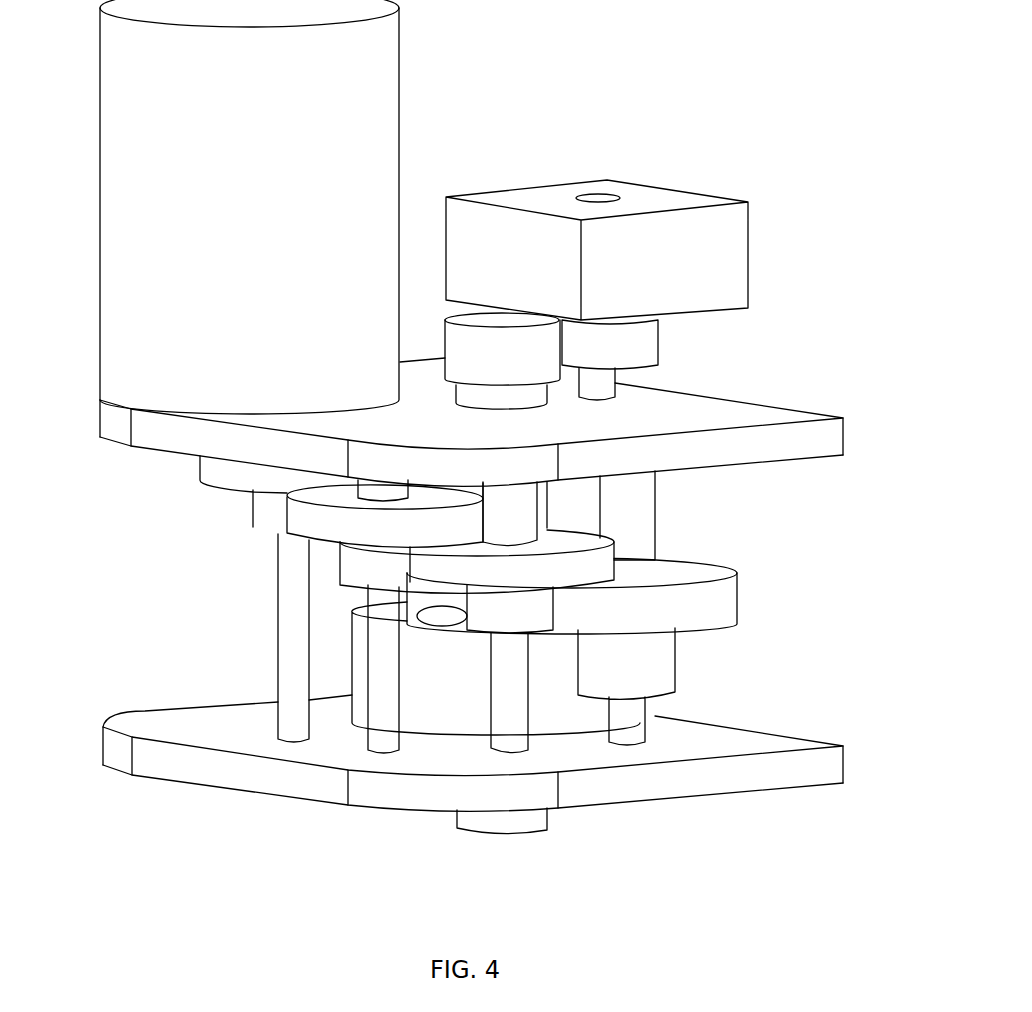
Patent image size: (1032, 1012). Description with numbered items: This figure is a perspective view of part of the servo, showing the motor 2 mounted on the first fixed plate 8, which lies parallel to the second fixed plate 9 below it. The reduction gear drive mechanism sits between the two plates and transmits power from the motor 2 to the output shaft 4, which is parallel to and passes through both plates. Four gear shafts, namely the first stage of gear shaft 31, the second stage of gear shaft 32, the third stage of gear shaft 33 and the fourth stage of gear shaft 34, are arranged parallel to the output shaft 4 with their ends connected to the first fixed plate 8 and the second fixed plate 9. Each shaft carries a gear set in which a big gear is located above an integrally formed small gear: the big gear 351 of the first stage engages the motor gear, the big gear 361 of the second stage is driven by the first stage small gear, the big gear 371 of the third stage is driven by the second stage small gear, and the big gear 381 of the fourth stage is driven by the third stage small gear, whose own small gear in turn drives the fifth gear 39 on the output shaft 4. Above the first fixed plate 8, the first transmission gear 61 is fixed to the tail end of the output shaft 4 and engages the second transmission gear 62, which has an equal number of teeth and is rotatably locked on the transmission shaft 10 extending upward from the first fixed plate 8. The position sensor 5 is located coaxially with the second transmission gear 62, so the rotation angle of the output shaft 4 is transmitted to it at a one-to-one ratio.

The motor 2 is at (100, 214).
The position sensor 5 is at (740, 258).
The first fixed plate 8 is at (100, 428).
The second fixed plate 9 is at (845, 762).
The transmission shaft 10 is at (614, 380).
The output shaft 4 is at (548, 824).
The first stage of gear shaft 31 is at (280, 600).
The second stage of gear shaft 32 is at (380, 745).
The third stage of gear shaft 33 is at (500, 740).
The fourth stage of gear shaft 34 is at (645, 525).
The fifth gear 39 is at (665, 700).
The first transmission gear 61 is at (456, 333).
The second transmission gear 62 is at (650, 345).
The big gear of the first stage of gear set 351 is at (200, 482).
The big gear of the second stage of gear set 361 is at (287, 522).
The big gear of the third stage of gear set 371 is at (616, 552).
The big gear of the fourth stage of gear set 381 is at (737, 602).